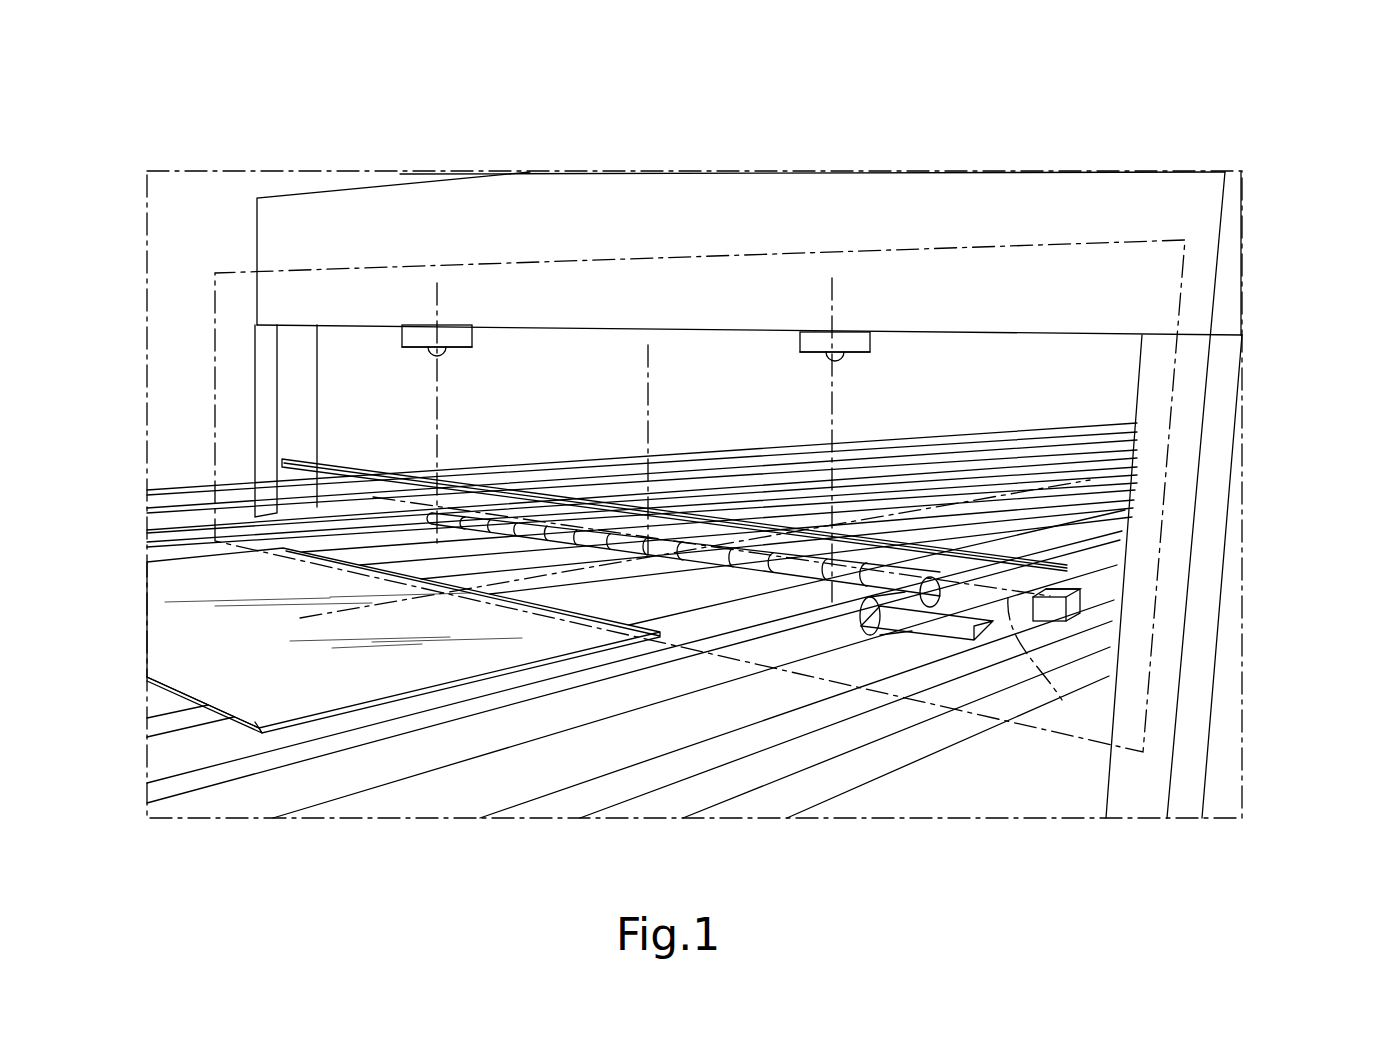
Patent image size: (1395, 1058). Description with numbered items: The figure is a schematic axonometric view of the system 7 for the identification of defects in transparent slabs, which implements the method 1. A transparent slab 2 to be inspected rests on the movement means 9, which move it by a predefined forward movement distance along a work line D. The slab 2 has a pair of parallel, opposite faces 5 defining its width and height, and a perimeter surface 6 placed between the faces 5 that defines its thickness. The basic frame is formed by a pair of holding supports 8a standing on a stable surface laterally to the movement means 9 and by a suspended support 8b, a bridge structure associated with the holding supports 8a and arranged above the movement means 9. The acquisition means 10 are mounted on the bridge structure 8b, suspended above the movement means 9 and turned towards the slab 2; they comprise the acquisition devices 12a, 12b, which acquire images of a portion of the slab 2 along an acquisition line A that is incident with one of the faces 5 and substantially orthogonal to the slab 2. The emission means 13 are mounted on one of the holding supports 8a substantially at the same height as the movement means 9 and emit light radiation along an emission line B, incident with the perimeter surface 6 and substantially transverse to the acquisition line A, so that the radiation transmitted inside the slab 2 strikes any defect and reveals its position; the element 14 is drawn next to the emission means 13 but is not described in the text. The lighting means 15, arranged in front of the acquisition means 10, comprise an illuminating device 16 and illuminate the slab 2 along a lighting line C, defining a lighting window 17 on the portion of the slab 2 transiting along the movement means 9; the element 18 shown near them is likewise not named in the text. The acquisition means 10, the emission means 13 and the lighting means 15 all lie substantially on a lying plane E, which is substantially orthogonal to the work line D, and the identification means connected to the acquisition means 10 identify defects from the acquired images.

The method for the identification of defects in transparent slabs 1 is at (1314, 84).
The transparent slab 2 is at (158, 618).
The face 5 is at (212, 683).
The perimeter surface 6 is at (250, 729).
The system for the identification of defects in transparent slabs 7 is at (286, 158).
The holding support 8a is at (297, 390).
The suspended support 8b is at (630, 223).
The movement means 9 is at (522, 770).
The acquisition means 10 is at (496, 362).
The acquisition device 12a is at (445, 340).
The acquisition device 12b is at (852, 343).
The emission means 13 is at (1100, 604).
The detector top 14 is at (1063, 590).
The lighting means 15 is at (917, 668).
The illuminating device 16 is at (957, 630).
The lighting window 17 is at (410, 508).
The rollers 18 is at (930, 600).
The acquisition line A is at (438, 398).
The emission line B is at (1044, 664).
The lighting line C is at (650, 378).
The work line D is at (1090, 480).
The lying plane E is at (1160, 250).